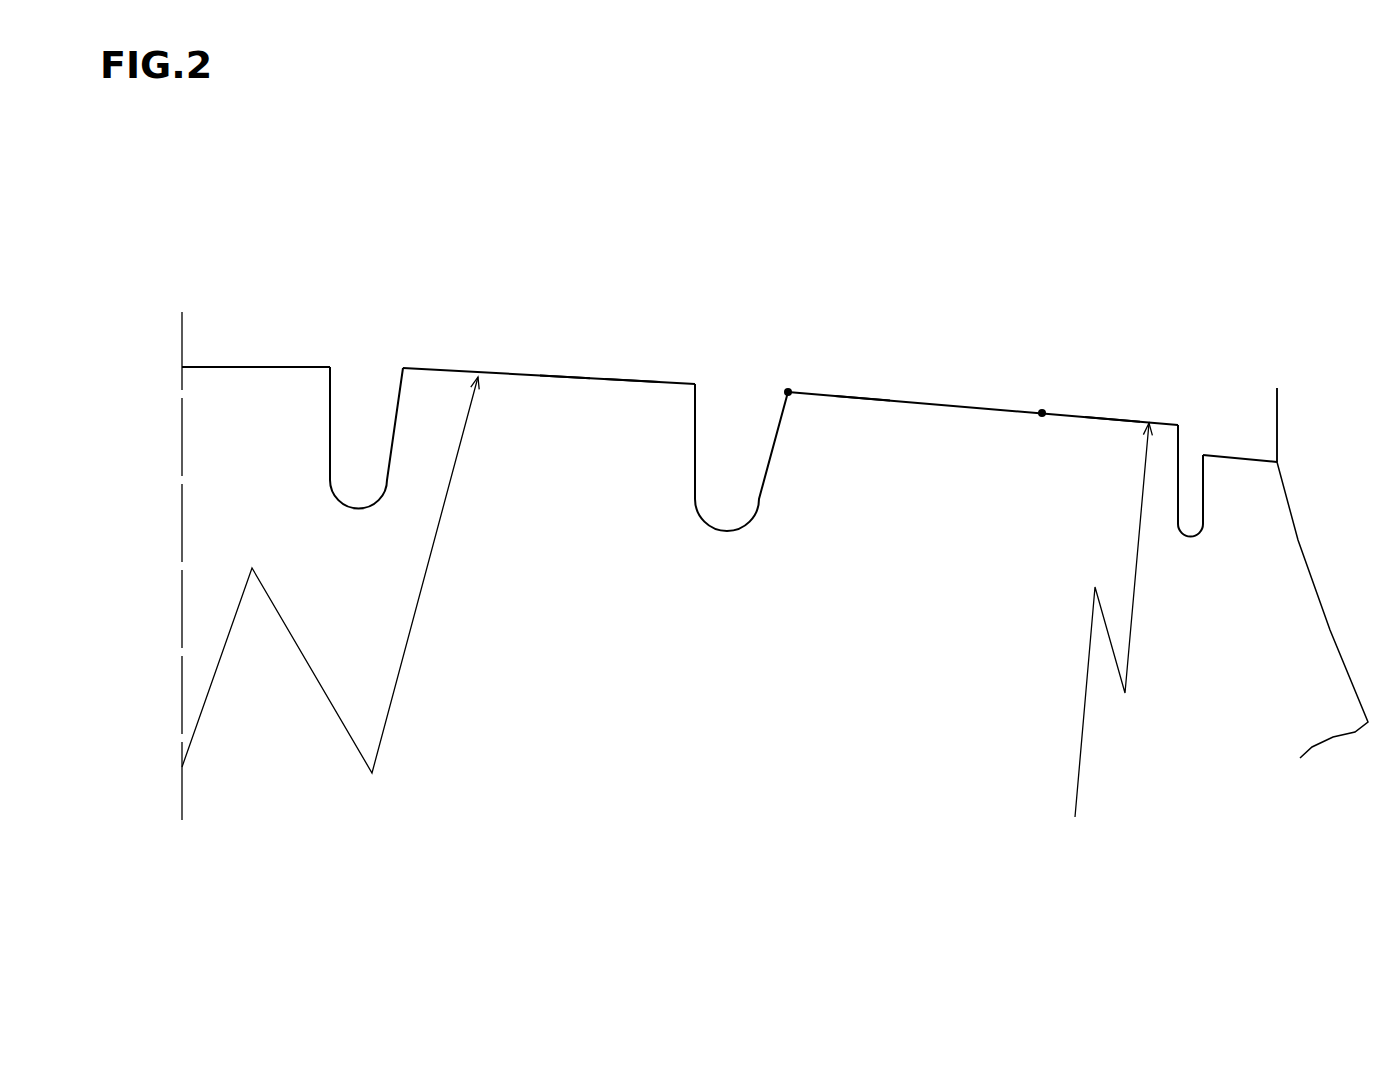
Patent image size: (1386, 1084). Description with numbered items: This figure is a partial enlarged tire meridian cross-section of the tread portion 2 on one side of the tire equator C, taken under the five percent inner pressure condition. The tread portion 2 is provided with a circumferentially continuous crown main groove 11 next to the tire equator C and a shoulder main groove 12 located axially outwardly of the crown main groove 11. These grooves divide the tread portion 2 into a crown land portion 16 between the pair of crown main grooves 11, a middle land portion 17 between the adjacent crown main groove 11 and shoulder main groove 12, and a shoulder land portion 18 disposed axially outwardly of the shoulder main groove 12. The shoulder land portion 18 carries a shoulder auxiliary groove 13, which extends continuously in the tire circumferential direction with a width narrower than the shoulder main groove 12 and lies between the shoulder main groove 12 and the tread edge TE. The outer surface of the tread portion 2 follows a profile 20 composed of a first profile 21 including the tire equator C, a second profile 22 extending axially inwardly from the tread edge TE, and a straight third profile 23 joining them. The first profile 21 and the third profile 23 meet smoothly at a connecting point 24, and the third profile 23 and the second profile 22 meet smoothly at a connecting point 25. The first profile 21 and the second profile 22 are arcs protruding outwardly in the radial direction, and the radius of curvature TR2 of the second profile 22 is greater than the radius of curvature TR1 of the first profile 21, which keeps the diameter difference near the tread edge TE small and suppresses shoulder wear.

The tread portion 2 is at (1090, 295).
The crown main groove 11 is at (362, 417).
The shoulder main groove 12 is at (740, 430).
The shoulder auxiliary groove 13 is at (1192, 480).
The crown land portion 16 is at (230, 417).
The middle land portion 17 is at (530, 420).
The shoulder land portion 18 is at (955, 460).
The profile 20 is at (563, 376).
The first profile 21 is at (630, 379).
The second profile 22 is at (1110, 418).
The third profile 23 is at (863, 398).
The connecting point 24 is at (788, 392).
The connecting point 25 is at (1042, 413).
The tire equator C is at (182, 551).
The tread edge TE is at (1277, 425).
The radius of curvature of the first profile TR1 is at (330, 575).
The radius of curvature of the second profile TR2 is at (1113, 620).